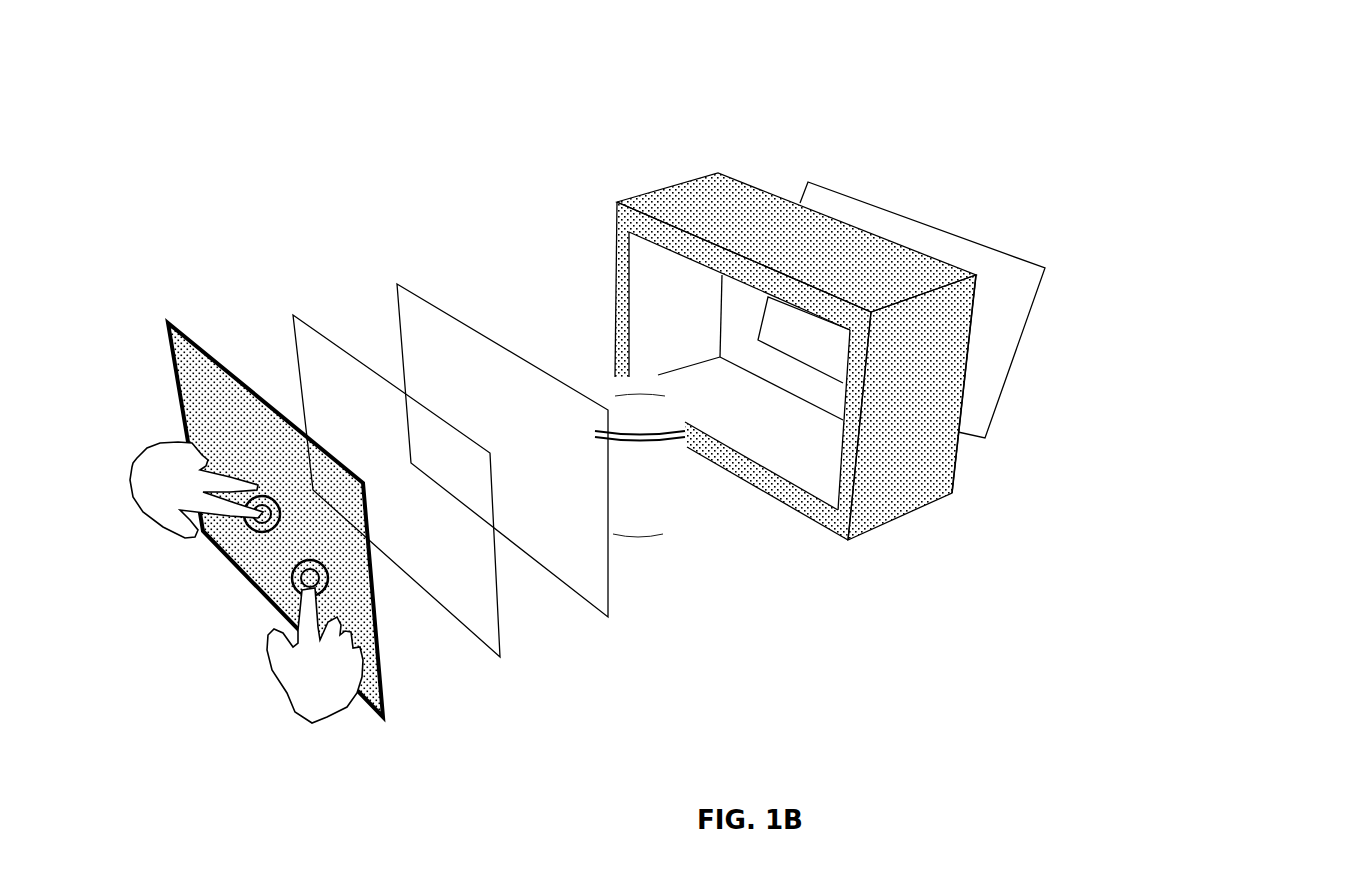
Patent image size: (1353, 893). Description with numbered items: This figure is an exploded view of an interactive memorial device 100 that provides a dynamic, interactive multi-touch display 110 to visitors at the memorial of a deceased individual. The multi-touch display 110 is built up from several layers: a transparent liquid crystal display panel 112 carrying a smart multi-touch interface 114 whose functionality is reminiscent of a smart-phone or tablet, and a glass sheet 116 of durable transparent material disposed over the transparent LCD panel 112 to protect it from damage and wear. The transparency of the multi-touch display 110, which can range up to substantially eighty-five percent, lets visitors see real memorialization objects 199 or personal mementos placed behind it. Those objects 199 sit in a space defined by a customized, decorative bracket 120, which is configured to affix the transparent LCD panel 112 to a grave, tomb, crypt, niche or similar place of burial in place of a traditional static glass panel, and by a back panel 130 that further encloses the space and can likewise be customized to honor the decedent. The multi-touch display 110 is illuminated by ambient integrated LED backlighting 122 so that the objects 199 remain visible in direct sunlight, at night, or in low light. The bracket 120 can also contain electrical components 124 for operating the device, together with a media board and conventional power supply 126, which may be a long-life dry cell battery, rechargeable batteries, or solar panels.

The interactive memorial device 100 is at (975, 105).
The multi-touch display 110 is at (438, 98).
The transparent liquid crystal display (LCD) panel 112 is at (439, 371).
The smart multi-touch interface 114 is at (256, 485).
The glass sheet 116 is at (373, 423).
The customized, decorative bracket 120 is at (951, 296).
The ambient integrated LED backlighting 122 is at (796, 213).
The electrical components 124 is at (908, 507).
The media board and power supply 126 is at (1080, 384).
The back panel 130 is at (996, 399).
The real memorialization objects 199 is at (723, 539).